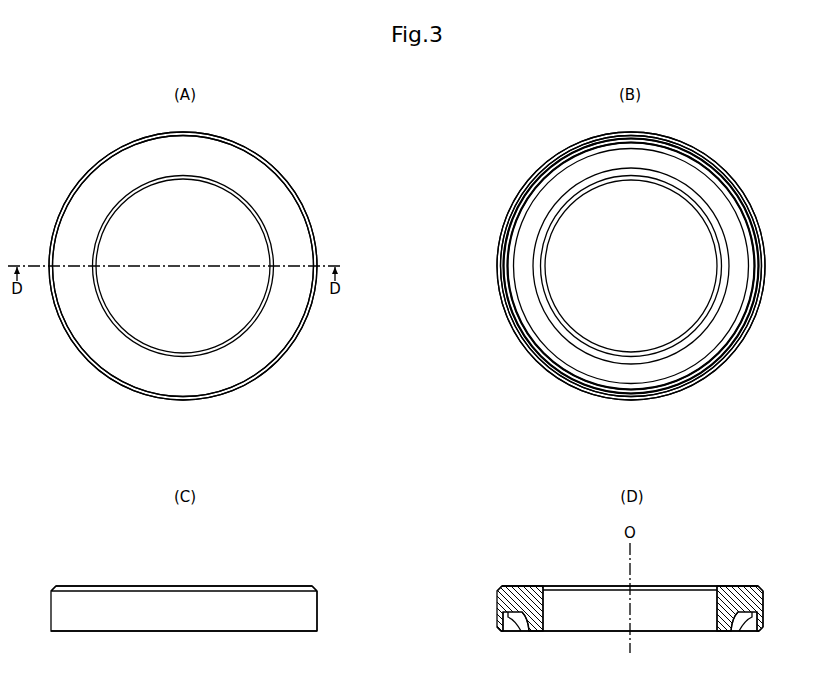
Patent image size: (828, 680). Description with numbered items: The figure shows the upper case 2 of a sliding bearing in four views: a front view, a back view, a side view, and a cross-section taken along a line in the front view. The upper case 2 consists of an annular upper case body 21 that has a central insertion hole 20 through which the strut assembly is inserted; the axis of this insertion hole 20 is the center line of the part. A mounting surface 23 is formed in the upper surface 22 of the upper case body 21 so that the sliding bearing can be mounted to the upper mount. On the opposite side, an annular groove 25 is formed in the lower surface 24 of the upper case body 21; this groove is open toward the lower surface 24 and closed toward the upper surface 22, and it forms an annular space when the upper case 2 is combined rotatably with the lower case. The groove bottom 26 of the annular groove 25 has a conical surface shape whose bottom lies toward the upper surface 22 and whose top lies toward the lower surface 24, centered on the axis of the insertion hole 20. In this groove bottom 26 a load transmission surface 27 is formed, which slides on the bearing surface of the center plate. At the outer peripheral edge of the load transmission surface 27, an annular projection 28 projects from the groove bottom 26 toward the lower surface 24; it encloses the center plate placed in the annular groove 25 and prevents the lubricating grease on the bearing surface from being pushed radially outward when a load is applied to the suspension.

The upper case 2 is at (323, 121).
The insertion hole 20 is at (157, 217).
The upper case body 21 is at (263, 153).
The upper surface 22 is at (273, 193).
The mounting surface 23 is at (293, 213).
The lower surface 24 is at (738, 193).
The annular groove 25 is at (742, 245).
The groove bottom 26 is at (615, 380).
The load transmission surface 27 is at (633, 382).
The annular projection 28 is at (532, 347).